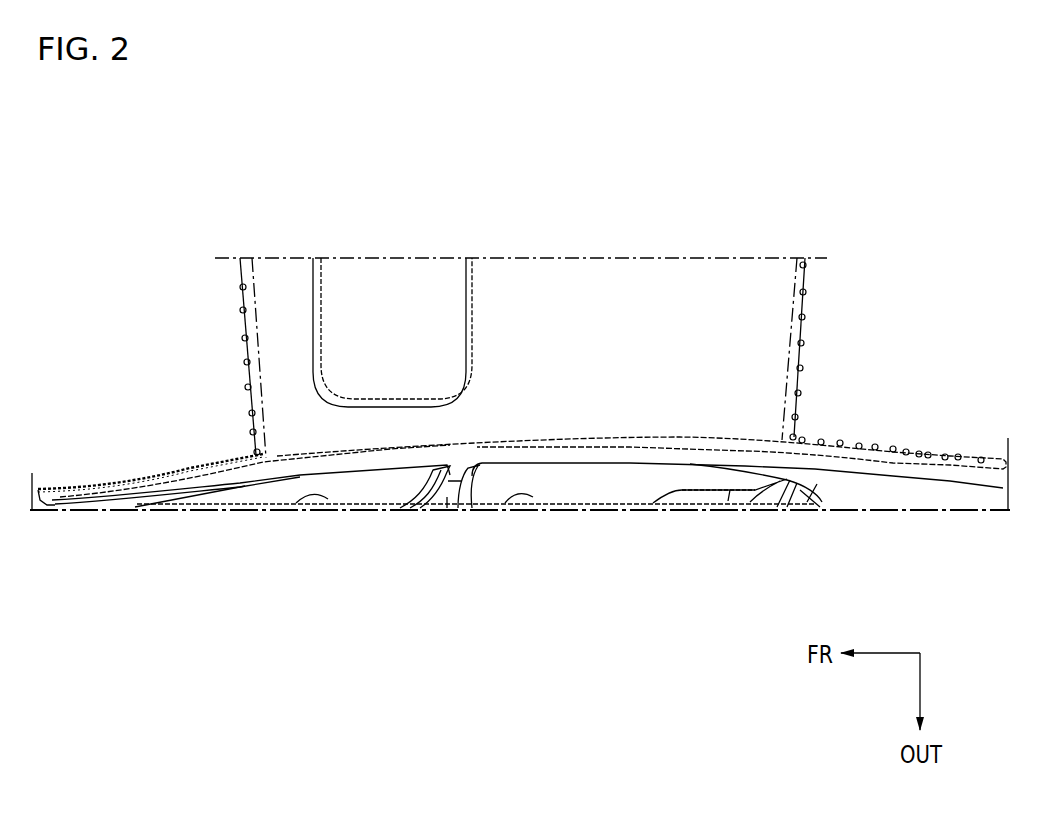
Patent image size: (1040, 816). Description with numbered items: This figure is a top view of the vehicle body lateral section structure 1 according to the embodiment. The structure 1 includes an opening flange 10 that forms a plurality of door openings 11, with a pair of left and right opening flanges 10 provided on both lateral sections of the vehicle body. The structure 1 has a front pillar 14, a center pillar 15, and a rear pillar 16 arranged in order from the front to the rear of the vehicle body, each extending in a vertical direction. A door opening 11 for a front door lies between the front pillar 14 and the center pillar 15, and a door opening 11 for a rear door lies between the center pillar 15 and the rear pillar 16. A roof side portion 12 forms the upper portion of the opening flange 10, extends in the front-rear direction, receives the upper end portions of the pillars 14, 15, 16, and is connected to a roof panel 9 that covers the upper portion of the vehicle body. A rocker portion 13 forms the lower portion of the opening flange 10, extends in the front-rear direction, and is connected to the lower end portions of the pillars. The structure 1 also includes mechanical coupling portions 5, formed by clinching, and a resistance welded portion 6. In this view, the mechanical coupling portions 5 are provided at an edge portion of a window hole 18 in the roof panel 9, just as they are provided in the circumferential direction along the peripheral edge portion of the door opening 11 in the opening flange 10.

The vehicle body lateral section structure 1 is at (659, 597).
The mechanical coupling portion 5 is at (806, 291).
The resistance welded portion 6 is at (176, 472).
The roof panel 9 is at (552, 296).
The opening flange 10 is at (582, 552).
The door opening 11 is at (297, 505).
The roof side portion 12 is at (362, 460).
The rocker portion 13 is at (390, 507).
The front pillar 14 is at (152, 510).
The center pillar 15 is at (448, 498).
The rear pillar 16 is at (813, 510).
The window hole 18 is at (242, 327).